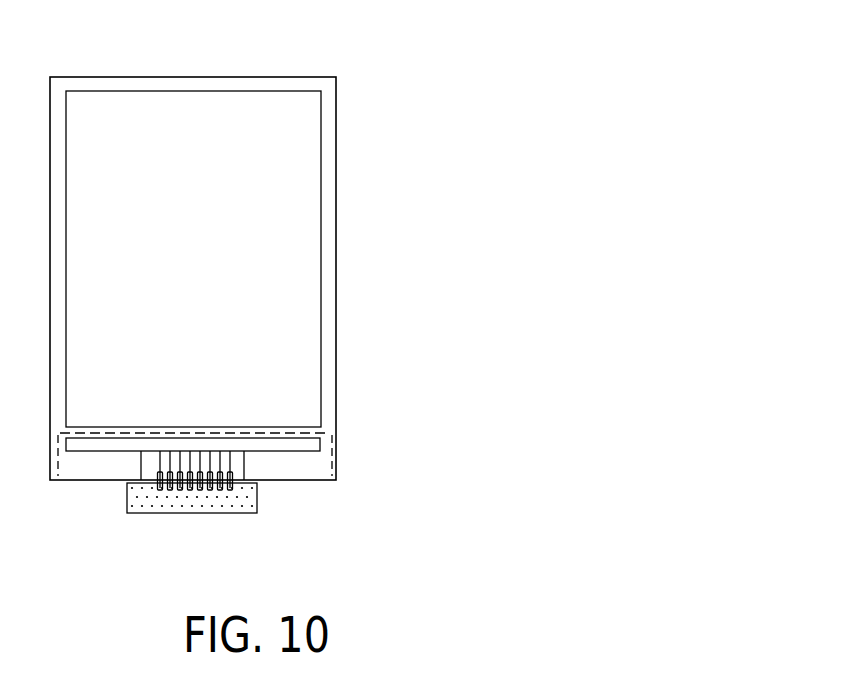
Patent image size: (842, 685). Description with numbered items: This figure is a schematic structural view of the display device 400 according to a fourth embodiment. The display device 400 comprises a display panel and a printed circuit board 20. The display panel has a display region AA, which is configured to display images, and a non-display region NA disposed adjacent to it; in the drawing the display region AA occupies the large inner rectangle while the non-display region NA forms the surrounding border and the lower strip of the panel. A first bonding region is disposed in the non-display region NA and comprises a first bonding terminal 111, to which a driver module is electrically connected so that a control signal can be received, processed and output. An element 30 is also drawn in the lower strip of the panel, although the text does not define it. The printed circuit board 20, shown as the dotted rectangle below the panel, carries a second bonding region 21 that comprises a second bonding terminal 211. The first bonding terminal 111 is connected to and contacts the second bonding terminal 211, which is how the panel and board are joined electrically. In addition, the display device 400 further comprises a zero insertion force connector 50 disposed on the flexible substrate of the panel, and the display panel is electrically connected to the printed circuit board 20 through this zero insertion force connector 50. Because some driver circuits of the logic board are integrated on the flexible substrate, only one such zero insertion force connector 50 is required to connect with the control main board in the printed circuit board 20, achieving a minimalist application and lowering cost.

The display device 400 is at (121, 52).
The non-display region NA is at (330, 267).
The display region AA is at (295, 346).
The driver circuit board 30 is at (300, 442).
The first bonding terminal 111 is at (230, 476).
The second bonding terminal 211 is at (187, 490).
The printed circuit board 20 is at (257, 492).
The second bonding region 21 is at (237, 492).
The zero insertion force connector 50 is at (146, 470).